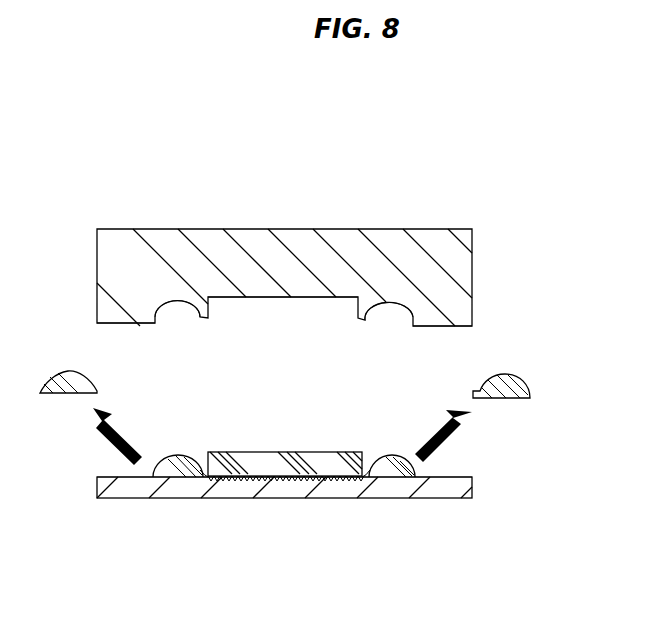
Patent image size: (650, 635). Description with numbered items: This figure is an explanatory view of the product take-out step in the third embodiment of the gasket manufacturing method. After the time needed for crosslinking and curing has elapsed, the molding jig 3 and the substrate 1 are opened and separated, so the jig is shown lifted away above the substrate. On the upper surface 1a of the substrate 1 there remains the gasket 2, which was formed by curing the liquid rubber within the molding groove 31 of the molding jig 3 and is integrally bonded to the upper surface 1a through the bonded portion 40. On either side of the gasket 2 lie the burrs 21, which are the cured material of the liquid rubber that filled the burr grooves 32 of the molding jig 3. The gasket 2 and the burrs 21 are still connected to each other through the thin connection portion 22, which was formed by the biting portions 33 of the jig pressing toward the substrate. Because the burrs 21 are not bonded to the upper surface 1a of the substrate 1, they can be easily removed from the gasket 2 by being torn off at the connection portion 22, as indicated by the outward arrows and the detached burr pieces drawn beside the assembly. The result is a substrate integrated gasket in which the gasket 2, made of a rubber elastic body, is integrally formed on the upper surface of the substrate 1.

The substrate 1 is at (377, 499).
The upper surface 1a is at (432, 477).
The gasket 2 is at (299, 446).
The burrs 21 is at (172, 458).
The connection portion 22 is at (203, 468).
The molding jig 3 is at (398, 232).
The molding groove 31 is at (287, 300).
The burr grooves 32 is at (152, 316).
The biting portions 33 is at (203, 320).
The bonded portion 40 is at (260, 500).